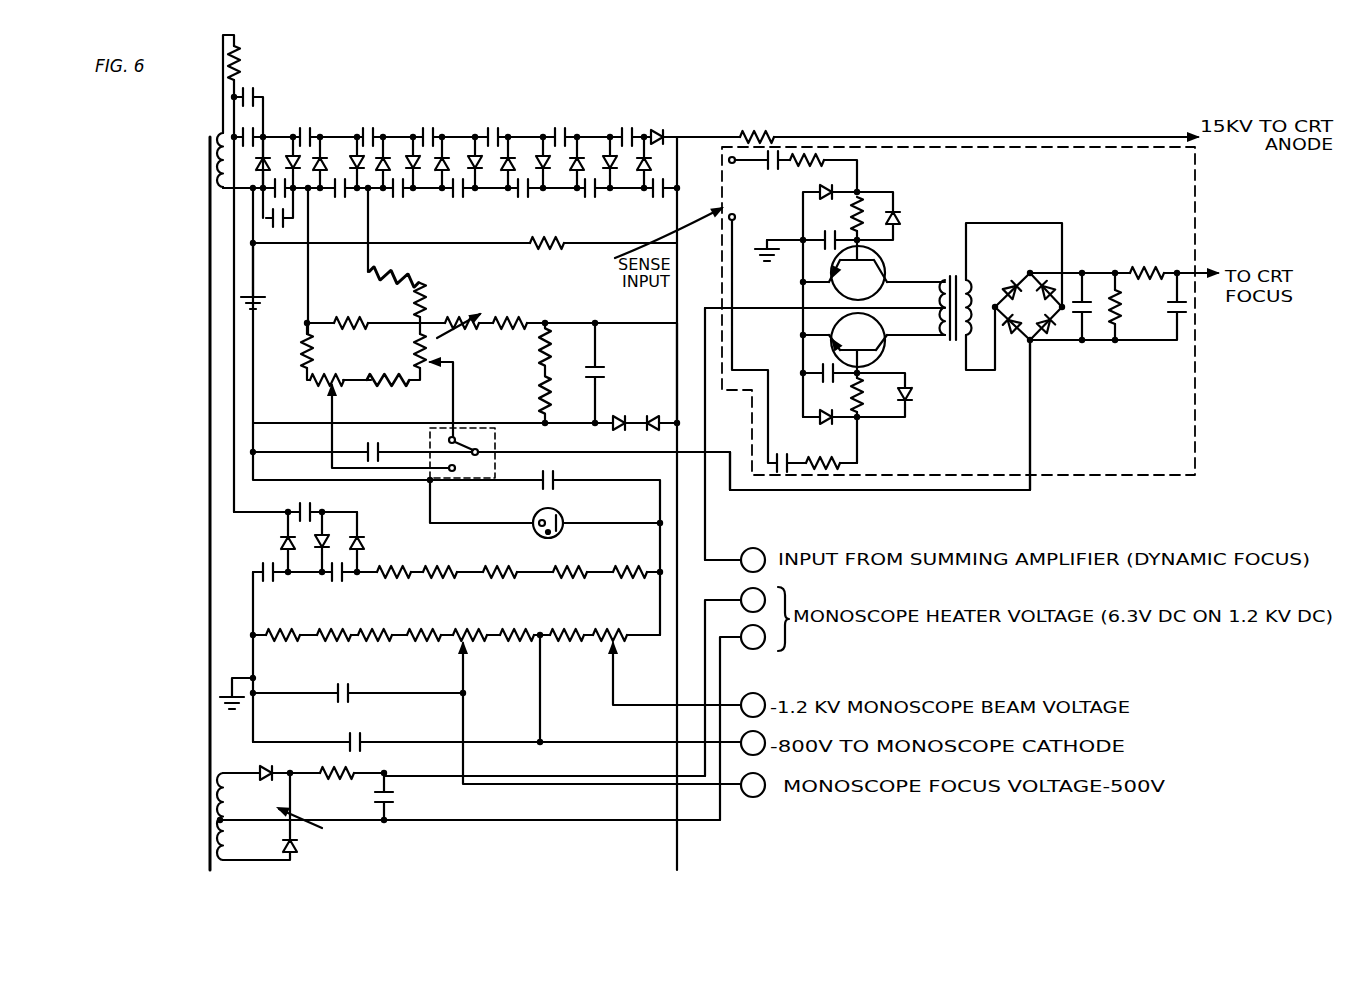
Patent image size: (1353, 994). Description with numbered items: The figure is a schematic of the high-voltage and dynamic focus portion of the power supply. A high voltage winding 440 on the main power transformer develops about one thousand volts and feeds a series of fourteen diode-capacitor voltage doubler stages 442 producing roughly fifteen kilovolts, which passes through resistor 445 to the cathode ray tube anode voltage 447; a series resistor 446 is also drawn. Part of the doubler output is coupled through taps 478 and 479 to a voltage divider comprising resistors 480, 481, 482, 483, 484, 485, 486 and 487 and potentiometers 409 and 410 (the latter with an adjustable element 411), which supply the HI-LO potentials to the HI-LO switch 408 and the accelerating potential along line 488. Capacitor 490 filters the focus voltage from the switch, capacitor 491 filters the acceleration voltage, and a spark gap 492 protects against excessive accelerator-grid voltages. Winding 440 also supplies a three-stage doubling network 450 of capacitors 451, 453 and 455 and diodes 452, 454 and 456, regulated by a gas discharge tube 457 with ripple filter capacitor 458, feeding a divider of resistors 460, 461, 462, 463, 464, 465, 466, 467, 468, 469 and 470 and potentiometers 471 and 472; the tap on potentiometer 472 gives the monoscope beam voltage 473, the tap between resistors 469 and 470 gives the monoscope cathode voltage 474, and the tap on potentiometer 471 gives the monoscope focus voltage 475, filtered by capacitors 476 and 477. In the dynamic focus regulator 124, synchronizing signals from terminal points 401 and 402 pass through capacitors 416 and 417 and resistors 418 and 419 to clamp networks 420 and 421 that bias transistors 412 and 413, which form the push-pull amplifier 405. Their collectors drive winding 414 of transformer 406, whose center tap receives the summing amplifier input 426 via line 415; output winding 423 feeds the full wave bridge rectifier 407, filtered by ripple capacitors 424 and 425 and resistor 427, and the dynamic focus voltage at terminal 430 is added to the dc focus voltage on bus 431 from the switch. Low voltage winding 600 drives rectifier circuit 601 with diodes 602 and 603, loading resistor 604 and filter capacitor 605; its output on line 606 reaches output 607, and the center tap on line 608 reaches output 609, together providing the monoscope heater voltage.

The high voltage winding 440 is at (218, 134).
The diode-capacitor voltage doubler rectifier stages 442 is at (410, 127).
The tap 478 is at (313, 214).
The tap 479 is at (376, 214).
The resistor 446 is at (552, 240).
The resistor 480 is at (402, 271).
The resistor 481 is at (427, 302).
The potentiometer 411 is at (450, 328).
The resistor 482 is at (347, 320).
The resistor 483 is at (517, 317).
The resistor 484 is at (554, 333).
The resistor 485 is at (544, 390).
The capacitor 491 is at (593, 367).
The resistor 487 is at (303, 348).
The potentiometer 409 is at (329, 377).
The potentiometer 410 is at (415, 353).
The resistor 486 is at (387, 386).
The line 488 is at (675, 358).
The spark gap 492 is at (630, 413).
The capacitor 490 is at (374, 450).
The HI-LO switch 408 is at (497, 446).
The ripple filter capacitor 458 is at (553, 478).
The gas discharge tube 457 is at (564, 518).
The three-stage diode-capacitor voltage doubling and rectifying network 450 is at (354, 512).
The capacitor 453 is at (298, 508).
The diode 454 is at (336, 504).
The diode 452 is at (278, 541).
The diode 456 is at (366, 538).
The capacitor 451 is at (261, 570).
The capacitor 455 is at (337, 578).
The resistor 460 is at (378, 568).
The resistor 461 is at (439, 577).
The resistor 462 is at (506, 568).
The resistor 463 is at (574, 568).
The resistor 464 is at (638, 568).
The resistor 465 is at (294, 631).
The resistor 466 is at (350, 631).
The resistor 467 is at (379, 639).
The resistor 468 is at (426, 630).
The potentiometer 471 is at (475, 623).
The resistor 469 is at (515, 627).
The resistor 470 is at (572, 627).
The potentiometer 472 is at (615, 627).
The filter capacitor 476 is at (351, 690).
The filter capacitor 477 is at (363, 737).
The low voltage winding 600 is at (218, 771).
The diode 602 is at (267, 769).
The loading resistor 604 is at (335, 780).
The filter capacitor 605 is at (391, 795).
The full wave rectifier circuit 601 is at (316, 827).
The diode 603 is at (297, 851).
The line 606 is at (567, 776).
The line 608 is at (578, 820).
The output 607 is at (742, 596).
The output 609 is at (760, 647).
The monoscope beam voltage 473 is at (760, 698).
The monoscope cathode voltage 474 is at (760, 740).
The monoscope focus voltage 475 is at (761, 793).
The line 415 is at (718, 517).
The bus 431 is at (742, 492).
The terminal point 401 is at (735, 164).
The terminal point 402 is at (734, 219).
The capacitor 416 is at (777, 153).
The resistor 418 is at (810, 156).
The resistor 445 is at (747, 133).
The cathode ray tube anode voltage 447 is at (951, 146).
The focus voltage regulator 124 is at (1197, 213).
The network 420 is at (819, 199).
The transistor 412 is at (828, 286).
The transistor 413 is at (885, 351).
The push-pull amplifier 405 is at (898, 294).
The transformer 406 is at (955, 276).
The winding 414 is at (940, 282).
The output winding 423 is at (972, 282).
The full wave bridge rectifier 407 is at (1032, 277).
The ripple capacitor 424 is at (1085, 270).
The input from parabolic voltage summing amplifier 426 is at (1115, 283).
The resistor 427 is at (1147, 260).
The ripple capacitor 425 is at (1175, 288).
The terminal 430 is at (1193, 272).
The network 421 is at (825, 413).
The capacitor 417 is at (784, 459).
The resistor 419 is at (833, 460).